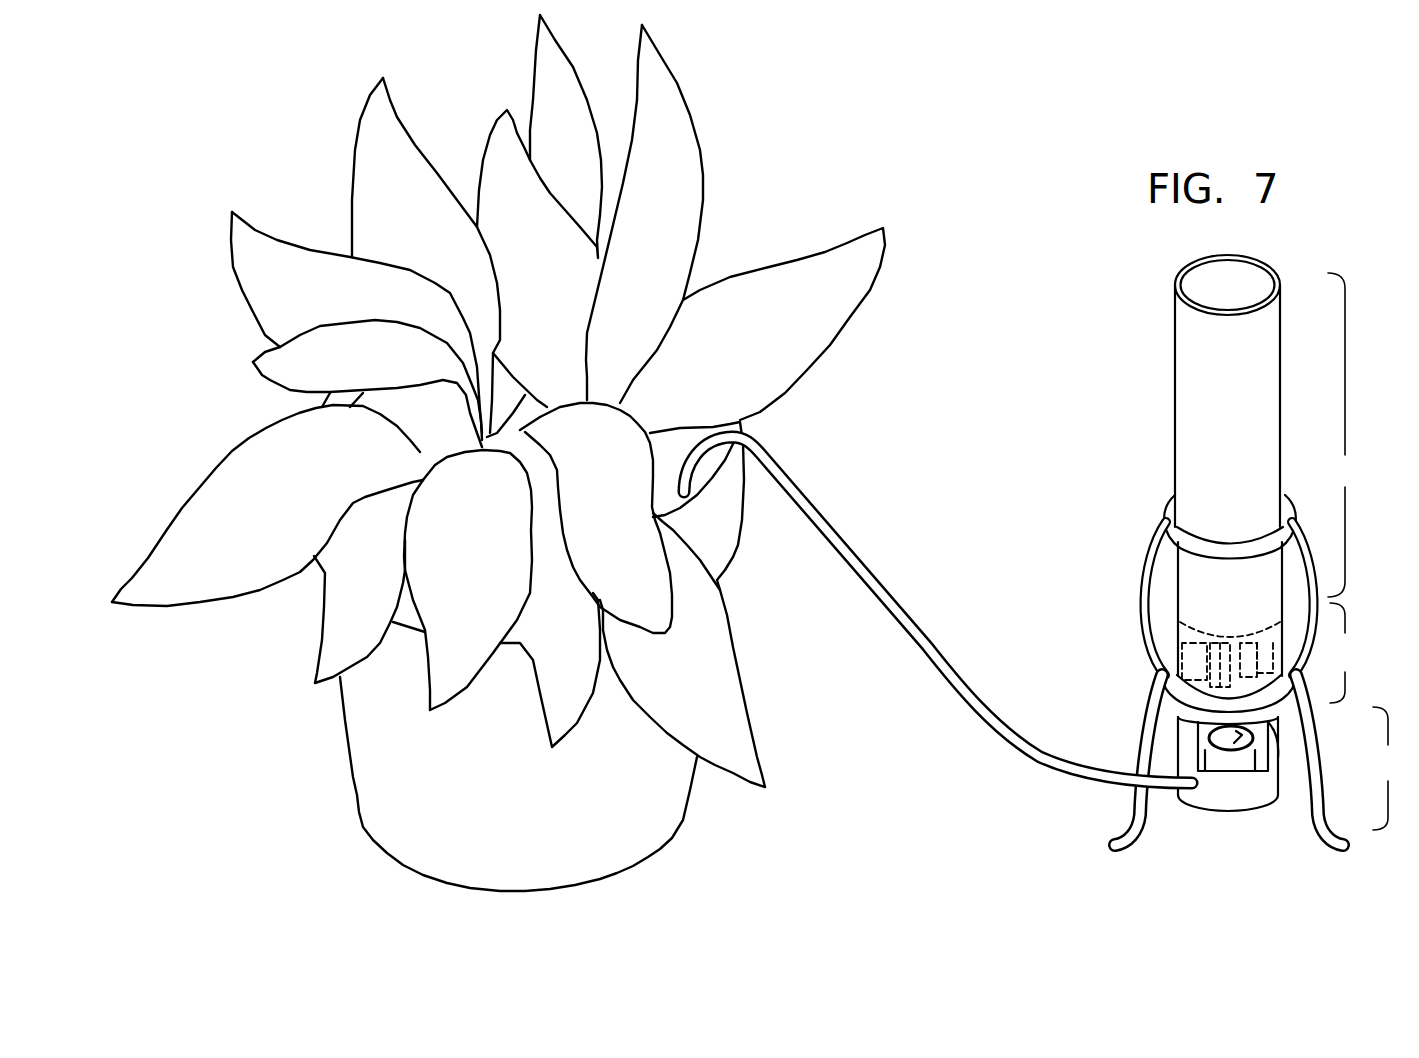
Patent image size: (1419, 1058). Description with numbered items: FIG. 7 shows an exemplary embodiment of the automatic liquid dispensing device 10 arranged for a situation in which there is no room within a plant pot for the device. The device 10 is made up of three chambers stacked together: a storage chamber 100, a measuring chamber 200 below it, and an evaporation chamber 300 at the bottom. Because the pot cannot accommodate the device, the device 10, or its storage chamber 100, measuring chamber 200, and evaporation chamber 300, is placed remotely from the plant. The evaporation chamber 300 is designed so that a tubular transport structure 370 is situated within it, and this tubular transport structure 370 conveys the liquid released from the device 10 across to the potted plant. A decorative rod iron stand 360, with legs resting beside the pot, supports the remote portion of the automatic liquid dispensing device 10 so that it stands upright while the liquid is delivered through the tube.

The automatic liquid dispensing device 10 is at (1218, 550).
The storage chamber 100 is at (1264, 426).
The measuring chamber 200 is at (1263, 627).
The evaporation chamber 300 is at (1261, 760).
The rod iron stand 360 is at (1125, 550).
The tubular transport structure 370 is at (945, 637).